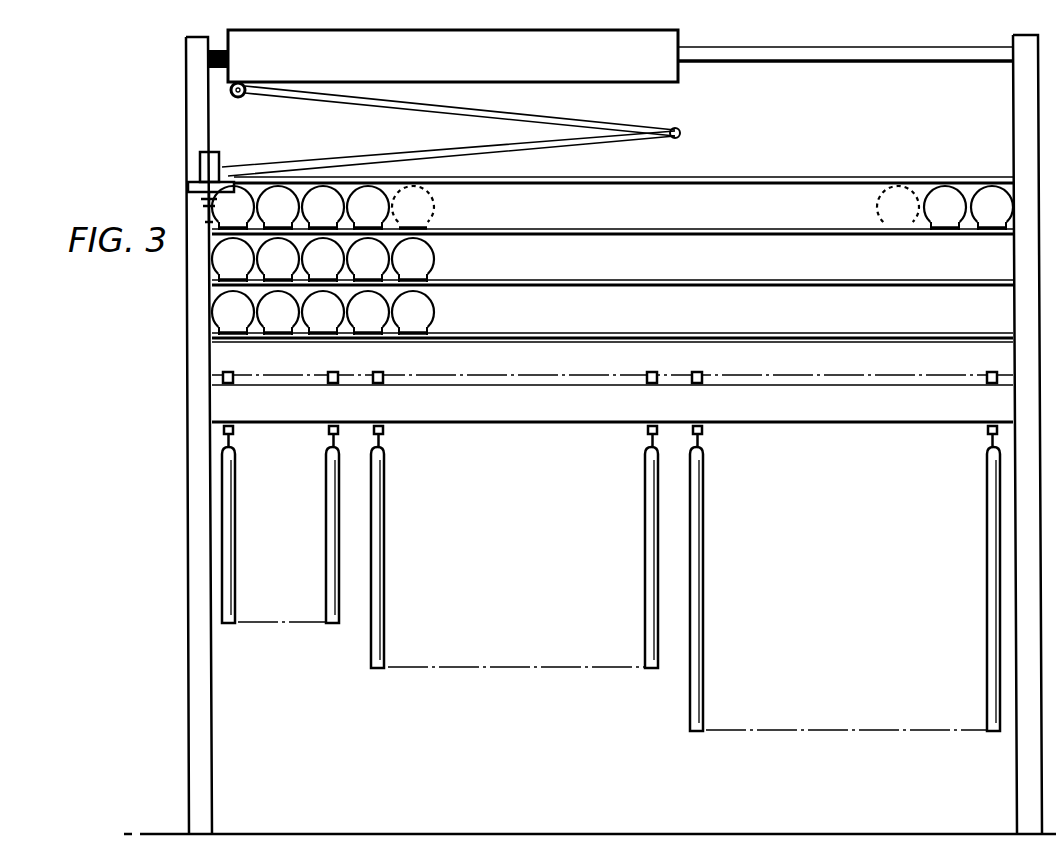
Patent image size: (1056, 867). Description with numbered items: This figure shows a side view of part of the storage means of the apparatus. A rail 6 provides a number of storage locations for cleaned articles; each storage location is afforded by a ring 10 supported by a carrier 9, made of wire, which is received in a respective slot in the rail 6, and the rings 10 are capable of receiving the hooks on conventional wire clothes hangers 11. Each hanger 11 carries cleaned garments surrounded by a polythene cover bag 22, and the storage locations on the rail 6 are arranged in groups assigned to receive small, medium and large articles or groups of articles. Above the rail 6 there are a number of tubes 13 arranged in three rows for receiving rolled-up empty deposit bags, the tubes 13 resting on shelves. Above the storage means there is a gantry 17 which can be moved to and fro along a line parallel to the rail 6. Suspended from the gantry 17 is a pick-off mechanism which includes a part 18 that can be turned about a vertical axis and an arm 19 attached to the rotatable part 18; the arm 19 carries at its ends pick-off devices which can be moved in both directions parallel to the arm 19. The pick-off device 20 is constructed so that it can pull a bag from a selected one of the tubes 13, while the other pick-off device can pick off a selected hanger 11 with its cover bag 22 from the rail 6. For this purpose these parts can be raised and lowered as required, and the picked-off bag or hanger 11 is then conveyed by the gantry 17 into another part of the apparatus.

The rail 6 is at (528, 405).
The carrier 9 is at (336, 373).
The ring 10 is at (385, 440).
The wire clothes hanger 11 is at (327, 440).
The tube 13 is at (432, 185).
The gantry 17 is at (352, 62).
The rotatable part 18 is at (200, 164).
The arm 19 is at (222, 178).
The pick-off device 20 is at (206, 208).
The polythene cover bag 22 is at (388, 568).